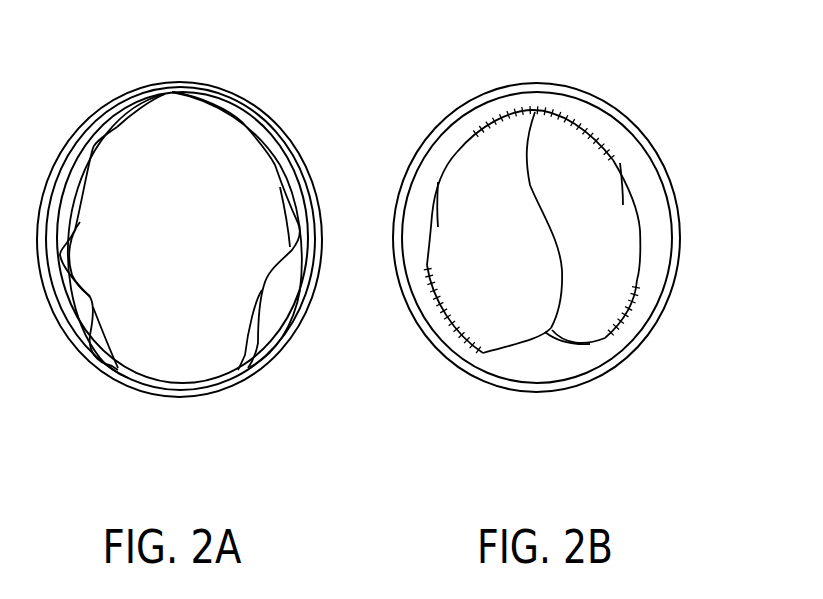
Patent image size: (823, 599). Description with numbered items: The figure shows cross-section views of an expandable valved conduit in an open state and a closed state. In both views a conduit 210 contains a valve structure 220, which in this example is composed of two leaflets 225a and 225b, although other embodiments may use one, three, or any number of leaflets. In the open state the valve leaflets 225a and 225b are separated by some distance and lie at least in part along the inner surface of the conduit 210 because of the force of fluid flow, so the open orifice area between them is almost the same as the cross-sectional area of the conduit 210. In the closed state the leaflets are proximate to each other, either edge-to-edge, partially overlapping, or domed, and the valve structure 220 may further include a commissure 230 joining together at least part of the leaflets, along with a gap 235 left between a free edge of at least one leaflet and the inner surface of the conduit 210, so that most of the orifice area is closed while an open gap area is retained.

In FIG. 2A, the conduit 210 is at (185, 398).
In FIG. 2B, the conduit 210 is at (550, 392).
In FIG. 2A, the valve structure 220 is at (165, 88).
In FIG. 2B, the valve structure 220 is at (545, 98).
In FIG. 2A, the valve leaflet 225a is at (82, 177).
In FIG. 2B, the valve leaflet 225a is at (463, 250).
In FIG. 2A, the valve leaflet 225b is at (283, 175).
In FIG. 2B, the valve leaflet 225b is at (593, 247).
In FIG. 2B, the commissure 230 is at (543, 157).
In FIG. 2B, the gap 235 is at (560, 347).